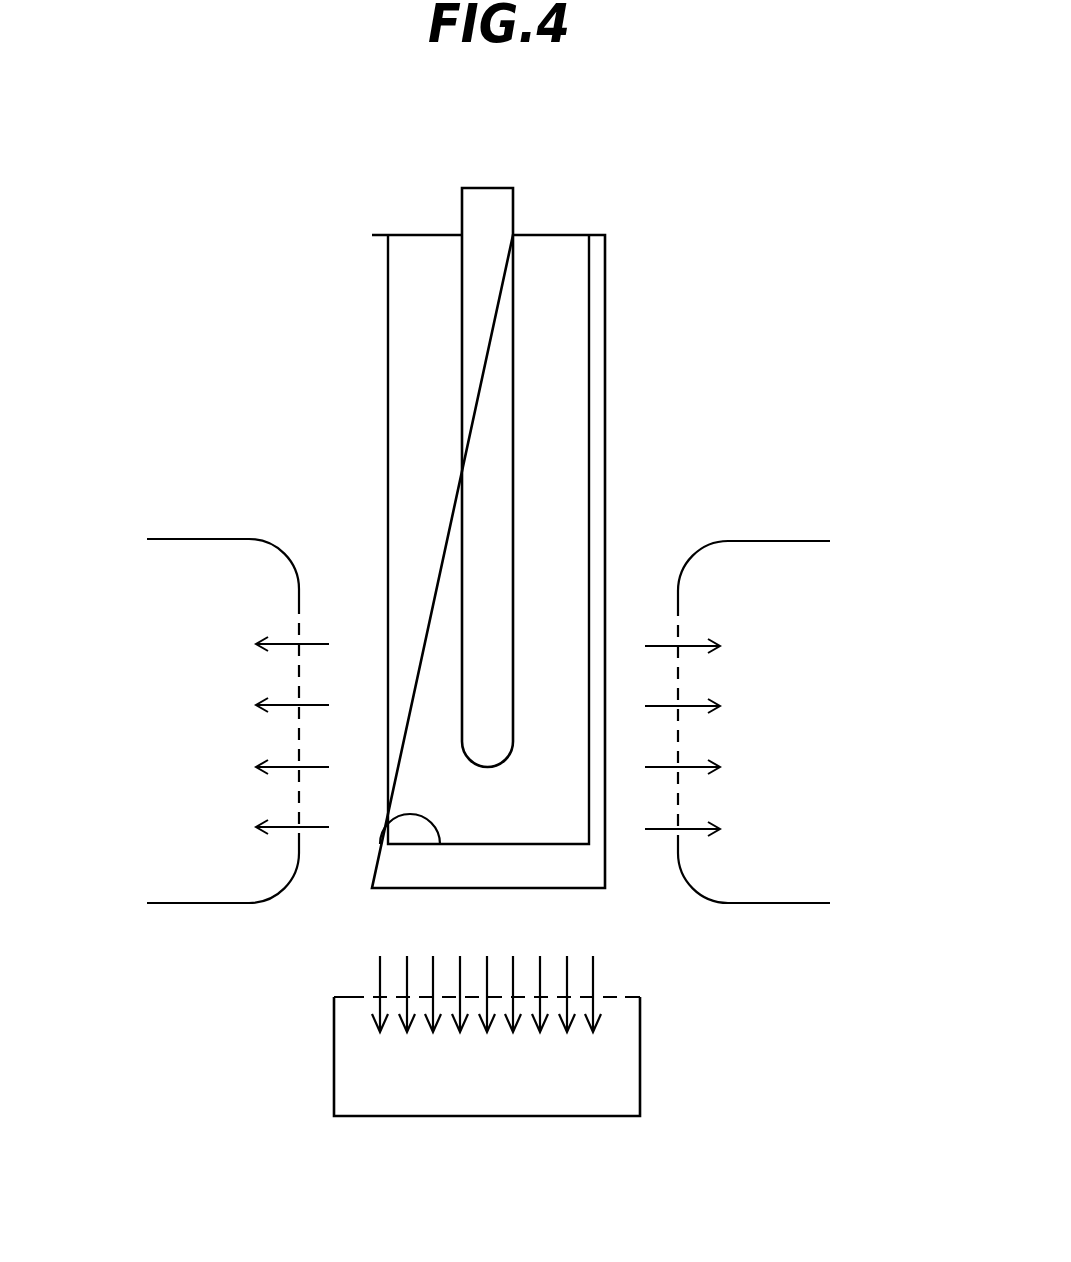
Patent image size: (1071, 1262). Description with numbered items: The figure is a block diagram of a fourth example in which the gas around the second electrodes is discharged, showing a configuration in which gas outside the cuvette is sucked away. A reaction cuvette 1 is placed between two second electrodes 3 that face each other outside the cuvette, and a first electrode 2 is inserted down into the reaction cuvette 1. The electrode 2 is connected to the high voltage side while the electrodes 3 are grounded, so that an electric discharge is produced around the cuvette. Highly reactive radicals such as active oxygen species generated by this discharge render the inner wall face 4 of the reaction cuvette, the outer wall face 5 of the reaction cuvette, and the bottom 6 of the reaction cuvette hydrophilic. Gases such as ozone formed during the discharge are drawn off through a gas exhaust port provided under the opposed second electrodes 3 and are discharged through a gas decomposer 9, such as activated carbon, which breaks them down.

The reaction cuvette 1 is at (606, 578).
The first electrode 2 is at (490, 188).
The second electrodes 3 is at (205, 905).
The inner wall face of the reaction cuvette 4 is at (388, 644).
The outer wall face of the reaction cuvette 5 is at (371, 595).
The bottom of the reaction cuvette 6 is at (380, 844).
The gas decomposer 9 is at (640, 1063).